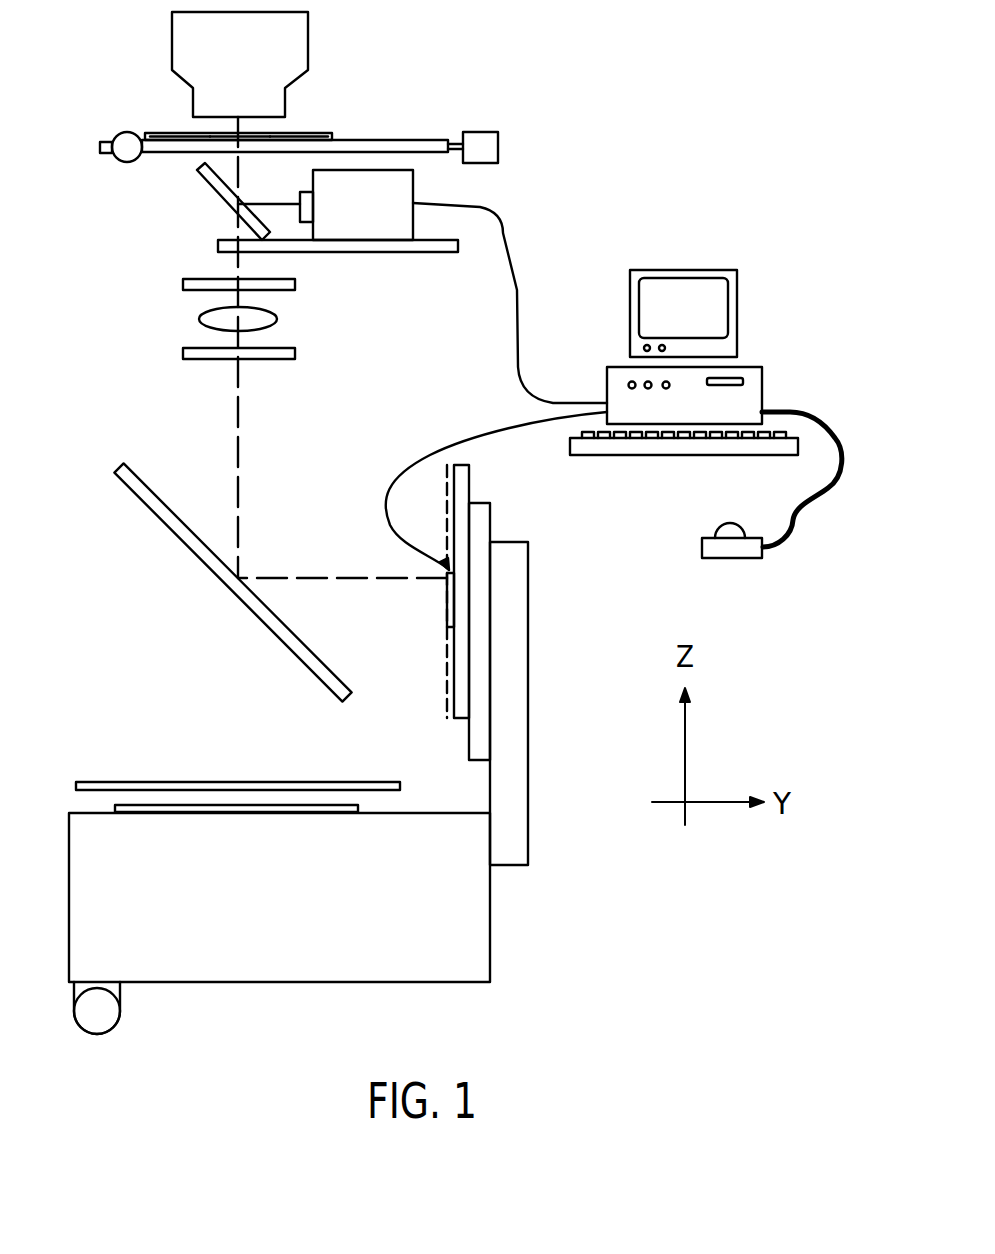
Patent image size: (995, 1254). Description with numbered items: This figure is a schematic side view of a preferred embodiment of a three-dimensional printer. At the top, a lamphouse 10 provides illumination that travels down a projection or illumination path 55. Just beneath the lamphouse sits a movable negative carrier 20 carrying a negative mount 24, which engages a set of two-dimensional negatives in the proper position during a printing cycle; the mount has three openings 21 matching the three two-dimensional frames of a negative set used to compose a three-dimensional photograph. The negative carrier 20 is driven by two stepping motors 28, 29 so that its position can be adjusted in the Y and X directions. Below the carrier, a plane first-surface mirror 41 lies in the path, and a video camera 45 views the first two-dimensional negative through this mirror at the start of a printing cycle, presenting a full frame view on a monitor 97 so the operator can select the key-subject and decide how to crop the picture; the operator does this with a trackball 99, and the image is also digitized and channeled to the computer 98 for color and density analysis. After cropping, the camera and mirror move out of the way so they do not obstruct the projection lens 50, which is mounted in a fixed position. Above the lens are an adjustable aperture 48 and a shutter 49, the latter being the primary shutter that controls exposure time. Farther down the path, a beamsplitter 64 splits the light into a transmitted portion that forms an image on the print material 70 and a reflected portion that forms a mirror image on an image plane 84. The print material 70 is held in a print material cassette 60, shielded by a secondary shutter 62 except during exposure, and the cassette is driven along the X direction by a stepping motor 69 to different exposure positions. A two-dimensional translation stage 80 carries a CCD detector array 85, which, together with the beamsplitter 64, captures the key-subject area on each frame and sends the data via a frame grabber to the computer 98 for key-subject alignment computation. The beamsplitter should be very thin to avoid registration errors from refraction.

The lamphouse 10 is at (298, 44).
The movable negative carrier 20 is at (408, 142).
The opening 21 is at (210, 137).
The negative mount 24 is at (333, 137).
The stepping motor 28 is at (477, 137).
The stepping motor 29 is at (133, 158).
The first-surface mirror 41 is at (217, 190).
The video camera 45 is at (408, 193).
The adjustable aperture 48 is at (183, 285).
The shutter 49 is at (183, 354).
The projection lens 50 is at (275, 317).
The projection or illumination path 55 is at (238, 445).
The print material cassette 60 is at (477, 932).
The secondary shutter 62 is at (118, 787).
The beamsplitter 64 is at (123, 467).
The stepping motor 69 is at (107, 1020).
The print material 70 is at (340, 805).
The two-dimensional translation stage 80 is at (520, 768).
The image plane 84 is at (448, 703).
The CCD detector array 85 is at (448, 607).
The monitor 97 is at (718, 272).
The computer 98 is at (753, 380).
The trackball 99 is at (710, 544).